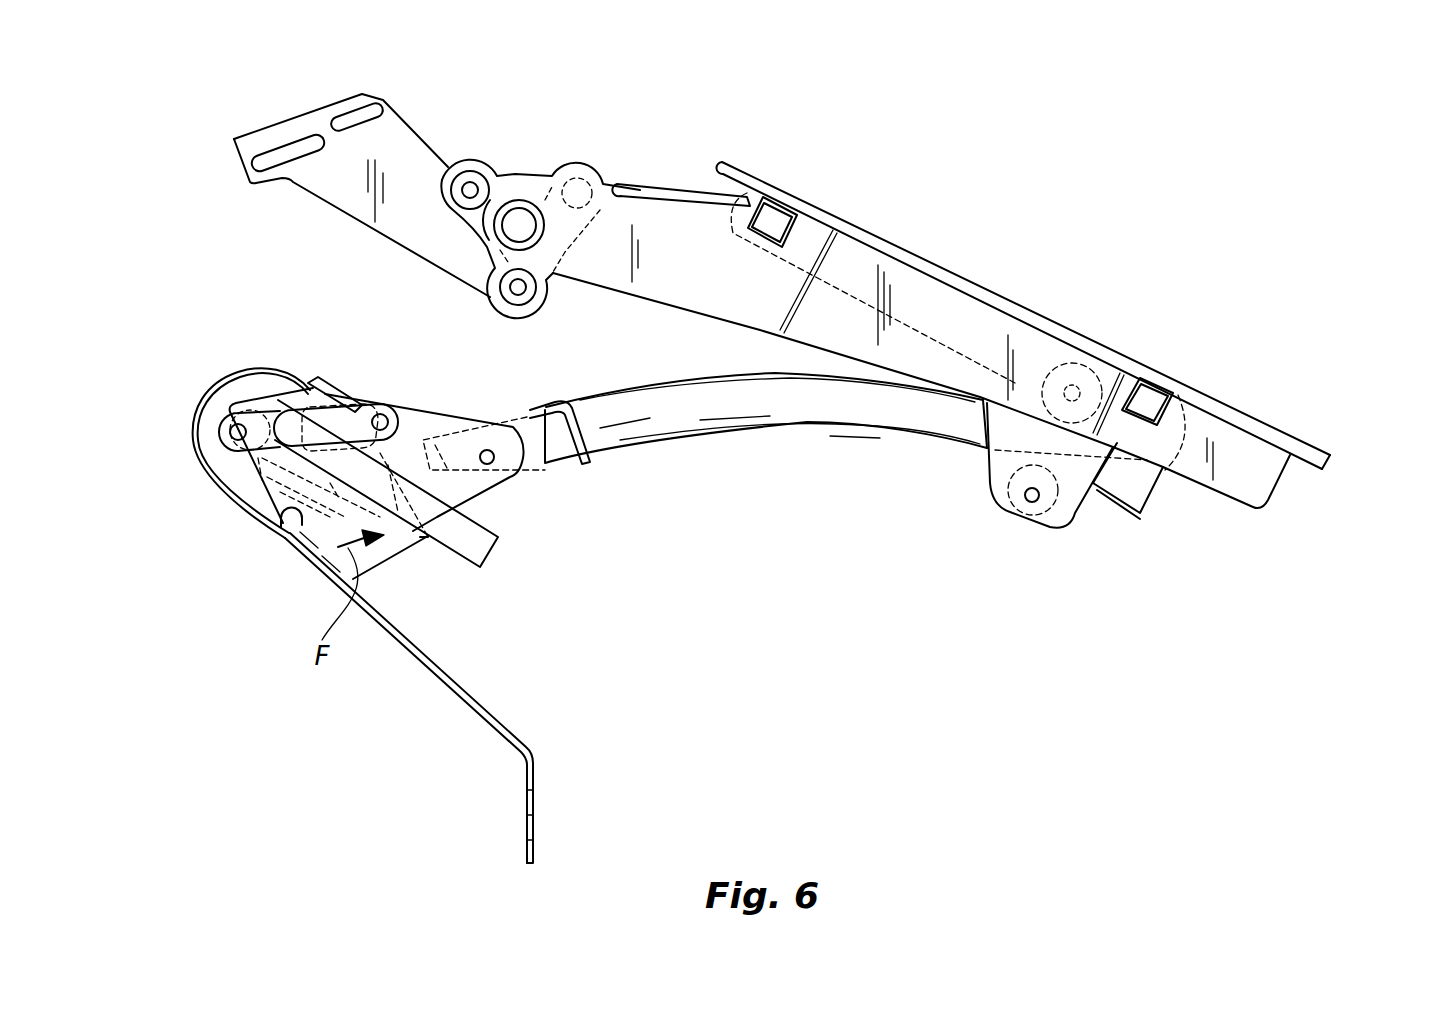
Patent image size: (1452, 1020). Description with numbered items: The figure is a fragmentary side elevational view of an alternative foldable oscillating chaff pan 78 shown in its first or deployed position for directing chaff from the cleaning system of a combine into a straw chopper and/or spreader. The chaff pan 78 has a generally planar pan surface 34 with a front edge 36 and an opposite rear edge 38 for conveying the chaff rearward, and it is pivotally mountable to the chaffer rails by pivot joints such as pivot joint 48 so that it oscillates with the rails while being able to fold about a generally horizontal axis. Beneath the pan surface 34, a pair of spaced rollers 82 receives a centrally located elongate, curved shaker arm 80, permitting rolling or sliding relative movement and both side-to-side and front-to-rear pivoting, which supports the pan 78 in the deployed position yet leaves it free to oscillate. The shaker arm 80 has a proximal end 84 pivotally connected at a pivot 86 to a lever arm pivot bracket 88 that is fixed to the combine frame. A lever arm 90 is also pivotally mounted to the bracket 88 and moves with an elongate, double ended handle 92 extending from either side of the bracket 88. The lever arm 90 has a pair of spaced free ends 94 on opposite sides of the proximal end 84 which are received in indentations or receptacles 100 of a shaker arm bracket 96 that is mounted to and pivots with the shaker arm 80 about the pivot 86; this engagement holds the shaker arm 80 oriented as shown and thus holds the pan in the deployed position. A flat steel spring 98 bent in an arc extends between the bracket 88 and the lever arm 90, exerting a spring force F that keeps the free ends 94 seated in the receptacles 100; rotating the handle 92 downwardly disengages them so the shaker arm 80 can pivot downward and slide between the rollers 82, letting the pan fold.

The pan surface 34 is at (1262, 418).
The front edge 36 is at (718, 163).
The rear edge 38 is at (1327, 459).
The pivot joint 48 is at (492, 170).
The chaff pan 78 is at (1183, 643).
The shaker arm 80 is at (774, 425).
The rollers 82 is at (1093, 375).
The proximal end 84 is at (568, 465).
The pivot 86 is at (488, 450).
The lever arm pivot bracket 88 is at (320, 577).
The lever arm 90 is at (262, 498).
The handle 92 is at (492, 550).
The free ends 94 is at (428, 538).
The shaker arm bracket 96 is at (596, 462).
The flat steel spring 98 is at (212, 385).
The receptacles 100 is at (428, 537).